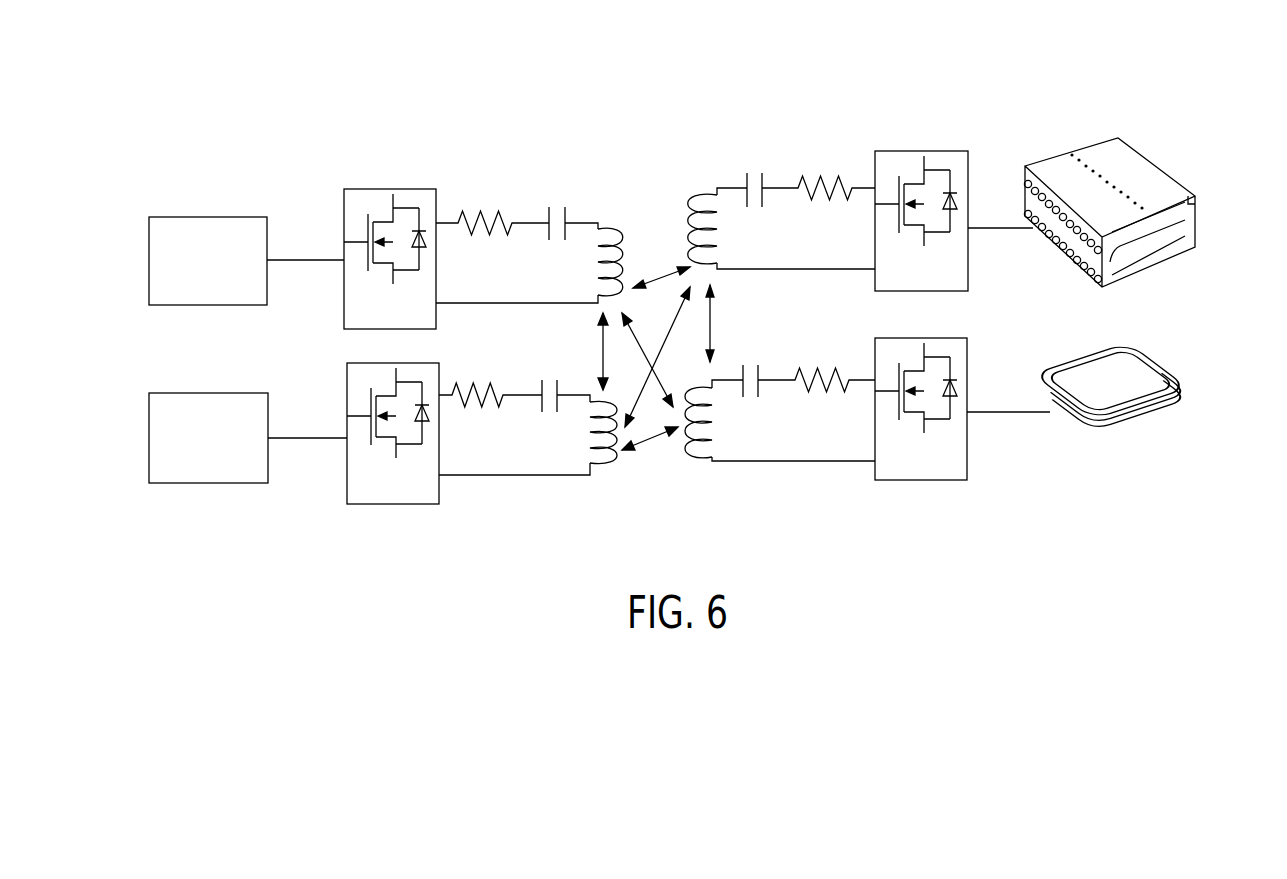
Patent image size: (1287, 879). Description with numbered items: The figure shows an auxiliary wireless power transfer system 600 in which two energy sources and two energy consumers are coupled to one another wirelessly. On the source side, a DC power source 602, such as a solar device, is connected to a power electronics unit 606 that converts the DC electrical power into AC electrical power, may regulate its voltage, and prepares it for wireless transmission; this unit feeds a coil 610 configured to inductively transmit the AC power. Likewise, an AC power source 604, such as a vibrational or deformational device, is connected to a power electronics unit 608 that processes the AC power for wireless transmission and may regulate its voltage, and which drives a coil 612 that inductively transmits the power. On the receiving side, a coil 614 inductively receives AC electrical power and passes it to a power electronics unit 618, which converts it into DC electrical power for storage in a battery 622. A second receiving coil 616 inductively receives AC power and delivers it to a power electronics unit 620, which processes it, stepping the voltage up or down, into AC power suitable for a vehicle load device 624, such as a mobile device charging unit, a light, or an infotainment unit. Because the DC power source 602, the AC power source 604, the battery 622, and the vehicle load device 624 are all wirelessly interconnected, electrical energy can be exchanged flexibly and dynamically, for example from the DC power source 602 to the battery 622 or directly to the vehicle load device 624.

The auxiliary wireless power transfer system 600 is at (180, 87).
The DC power source 602 is at (149, 262).
The AC power source 604 is at (149, 445).
The power electronics unit 606 is at (344, 305).
The power electronics unit 608 is at (347, 483).
The coil 610 is at (592, 210).
The coil 612 is at (518, 382).
The coil 614 is at (795, 168).
The coil 616 is at (787, 362).
The power electronics unit 618 is at (963, 142).
The power electronics unit 620 is at (913, 490).
The battery 622 is at (1192, 175).
The vehicle load device 624 is at (1173, 427).